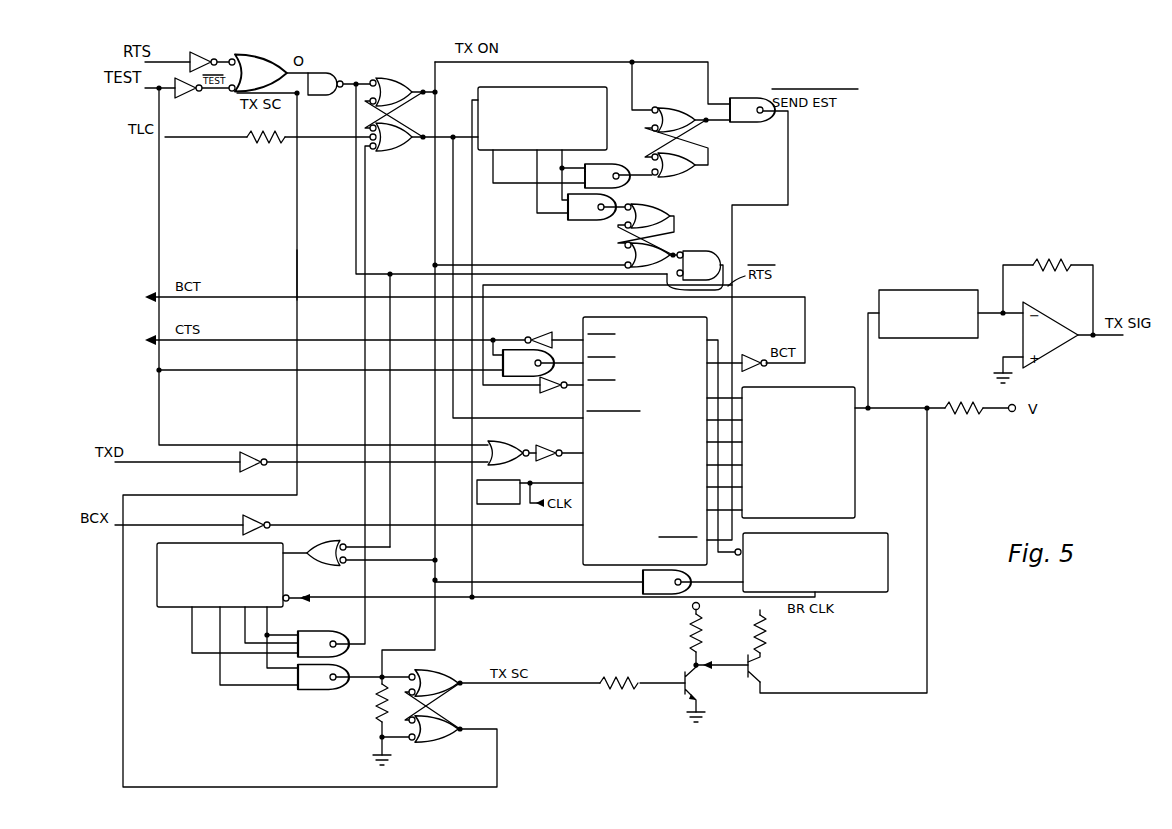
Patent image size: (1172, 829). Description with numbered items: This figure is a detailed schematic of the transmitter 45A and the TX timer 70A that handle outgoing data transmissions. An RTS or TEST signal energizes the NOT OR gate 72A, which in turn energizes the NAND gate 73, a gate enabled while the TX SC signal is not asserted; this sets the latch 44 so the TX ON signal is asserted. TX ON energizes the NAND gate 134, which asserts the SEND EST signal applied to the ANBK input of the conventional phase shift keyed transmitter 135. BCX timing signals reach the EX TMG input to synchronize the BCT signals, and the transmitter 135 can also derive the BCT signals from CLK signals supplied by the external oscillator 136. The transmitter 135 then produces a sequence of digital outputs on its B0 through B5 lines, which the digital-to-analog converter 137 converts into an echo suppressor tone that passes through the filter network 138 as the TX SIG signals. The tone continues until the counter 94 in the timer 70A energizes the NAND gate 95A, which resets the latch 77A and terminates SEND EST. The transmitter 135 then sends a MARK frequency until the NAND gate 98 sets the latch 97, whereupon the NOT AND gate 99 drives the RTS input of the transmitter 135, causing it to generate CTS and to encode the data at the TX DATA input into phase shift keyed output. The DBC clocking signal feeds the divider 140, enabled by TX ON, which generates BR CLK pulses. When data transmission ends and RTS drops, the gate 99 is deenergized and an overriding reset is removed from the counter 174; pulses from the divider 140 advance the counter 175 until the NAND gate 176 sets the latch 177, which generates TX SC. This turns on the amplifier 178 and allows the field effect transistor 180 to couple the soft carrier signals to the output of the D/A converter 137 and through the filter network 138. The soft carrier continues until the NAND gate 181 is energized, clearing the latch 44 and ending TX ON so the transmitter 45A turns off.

The NOT OR gate 72A is at (258, 73).
The NAND gate 73 is at (325, 84).
The latch 44 is at (420, 72).
The counter 94 is at (542, 119).
The latch 77A is at (687, 132).
The NAND gate 134 is at (744, 98).
The NAND gate 95A is at (600, 168).
The NAND gate 98 is at (592, 207).
The latch 97 is at (647, 236).
The NOT AND gate 99 is at (695, 270).
The timer 70A is at (288, 243).
The transmitter 45A is at (846, 296).
The filter network 138 is at (929, 292).
The digital-to-analog converter 137 is at (798, 452).
The phase shift keyed transmitter 135 is at (645, 441).
The external oscillator 136 is at (488, 504).
The divider 140 is at (861, 533).
The counter 174 is at (318, 546).
The counter 175 is at (223, 575).
The NAND gate 181 is at (313, 640).
The NAND gate 176 is at (320, 690).
The latch 177 is at (438, 669).
The amplifier 178 is at (672, 662).
The field effect transistor 180 is at (765, 668).